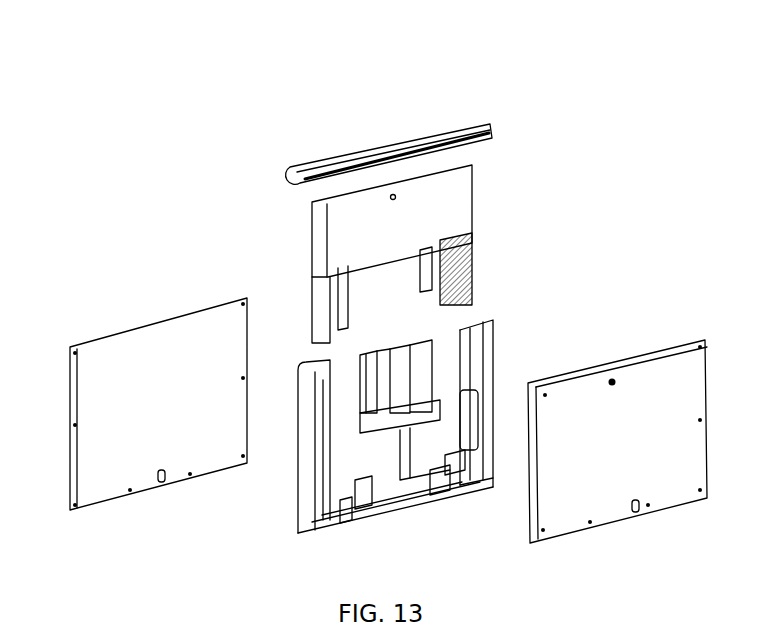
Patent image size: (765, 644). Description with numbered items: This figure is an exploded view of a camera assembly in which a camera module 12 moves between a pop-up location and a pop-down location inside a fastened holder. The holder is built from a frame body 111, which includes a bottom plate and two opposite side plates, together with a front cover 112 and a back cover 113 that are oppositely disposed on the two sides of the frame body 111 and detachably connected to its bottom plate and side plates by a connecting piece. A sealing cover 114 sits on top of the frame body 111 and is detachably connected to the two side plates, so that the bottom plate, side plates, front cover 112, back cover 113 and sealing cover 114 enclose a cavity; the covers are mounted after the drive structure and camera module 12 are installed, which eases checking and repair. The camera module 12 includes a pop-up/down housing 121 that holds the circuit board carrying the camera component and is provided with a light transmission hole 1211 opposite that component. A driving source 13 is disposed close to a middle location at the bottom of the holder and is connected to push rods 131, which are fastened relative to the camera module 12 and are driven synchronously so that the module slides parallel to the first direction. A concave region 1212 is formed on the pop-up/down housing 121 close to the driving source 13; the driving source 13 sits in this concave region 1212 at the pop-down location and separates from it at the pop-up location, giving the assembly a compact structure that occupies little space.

The camera module 12 is at (399, 178).
The pop-up/down housing 121 is at (444, 220).
The light transmission hole 1211 is at (391, 194).
The concave region 1212 is at (393, 278).
The sealing cover 114 is at (445, 133).
The frame body 111 is at (305, 485).
The front cover 112 is at (643, 387).
The back cover 113 is at (125, 372).
The driving source 13 is at (380, 408).
The push rods 131 is at (360, 395).